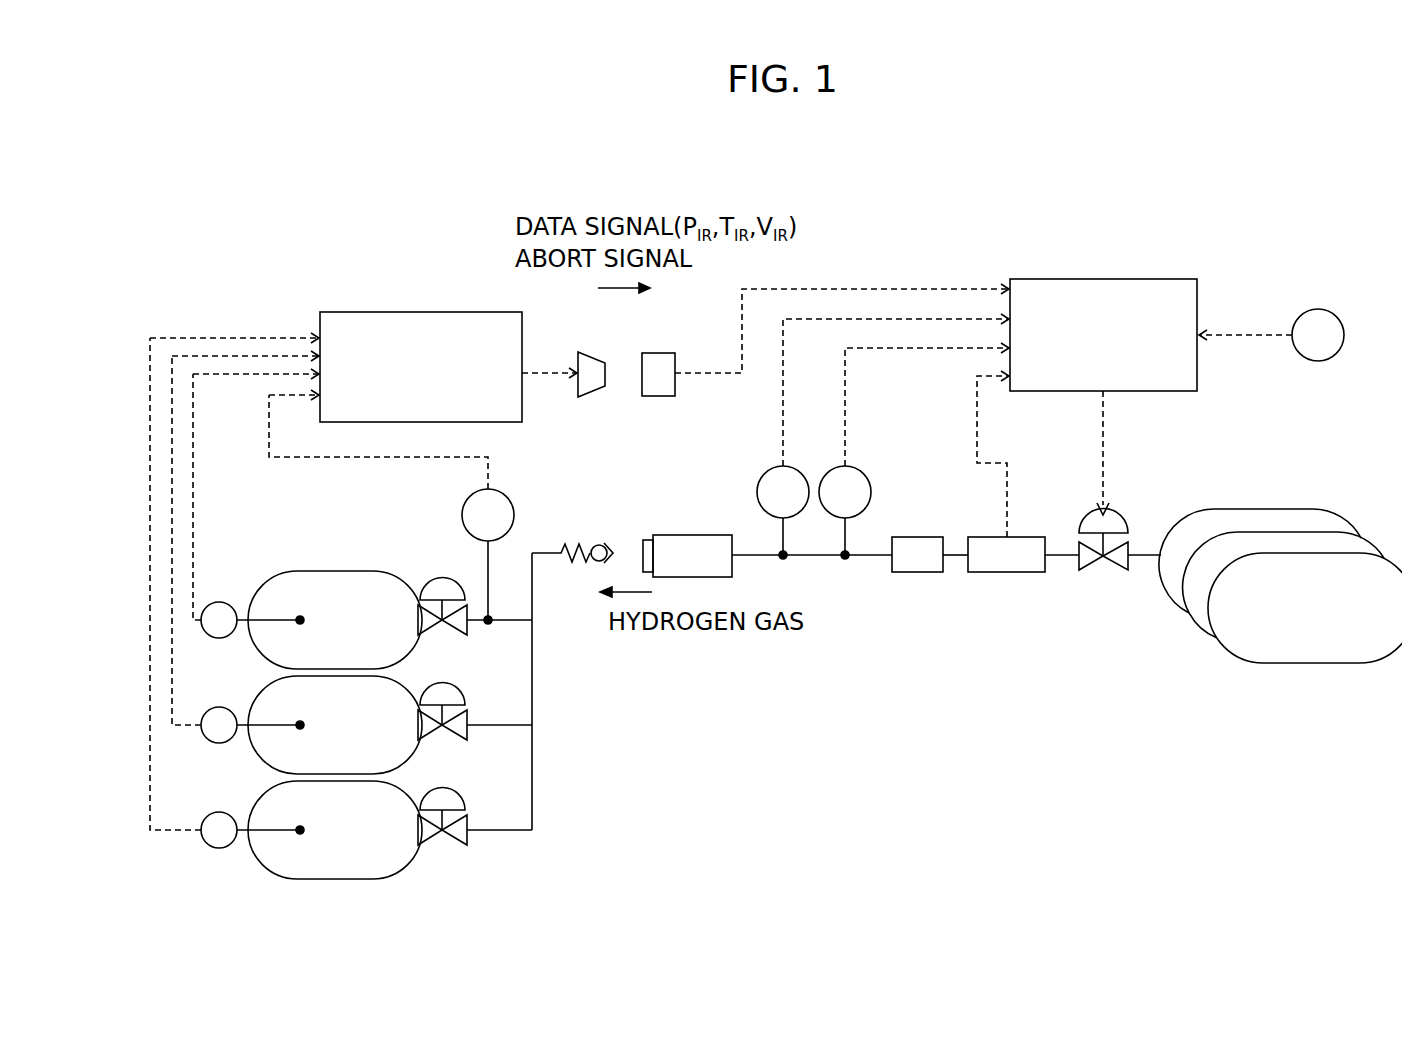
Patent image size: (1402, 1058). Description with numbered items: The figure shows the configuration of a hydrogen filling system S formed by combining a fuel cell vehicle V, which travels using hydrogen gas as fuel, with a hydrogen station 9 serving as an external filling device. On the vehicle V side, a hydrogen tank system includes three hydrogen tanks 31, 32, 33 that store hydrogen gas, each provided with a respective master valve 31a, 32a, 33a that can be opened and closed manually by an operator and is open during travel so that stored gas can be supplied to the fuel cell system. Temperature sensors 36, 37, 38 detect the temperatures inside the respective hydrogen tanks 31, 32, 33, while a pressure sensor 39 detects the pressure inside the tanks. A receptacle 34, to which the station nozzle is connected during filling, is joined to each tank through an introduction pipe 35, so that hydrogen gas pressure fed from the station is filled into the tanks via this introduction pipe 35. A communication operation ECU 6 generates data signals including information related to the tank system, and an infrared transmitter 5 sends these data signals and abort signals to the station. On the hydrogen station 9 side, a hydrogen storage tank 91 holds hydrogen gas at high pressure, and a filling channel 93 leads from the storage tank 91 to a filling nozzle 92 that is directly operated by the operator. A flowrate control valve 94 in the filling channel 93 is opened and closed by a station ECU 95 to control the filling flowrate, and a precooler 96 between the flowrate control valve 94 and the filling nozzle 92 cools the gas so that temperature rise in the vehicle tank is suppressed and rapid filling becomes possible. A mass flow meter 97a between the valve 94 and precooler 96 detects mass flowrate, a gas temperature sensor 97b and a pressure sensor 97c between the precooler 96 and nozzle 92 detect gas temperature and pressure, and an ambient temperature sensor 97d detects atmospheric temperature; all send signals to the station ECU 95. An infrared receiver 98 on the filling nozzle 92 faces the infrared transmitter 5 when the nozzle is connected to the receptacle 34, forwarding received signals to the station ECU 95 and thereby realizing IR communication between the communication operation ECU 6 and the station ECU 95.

The hydrogen filling system S is at (352, 156).
The fuel cell vehicle V is at (462, 239).
The hydrogen station 9 is at (874, 236).
The communication operation ECU 6 is at (440, 312).
The infrared transmitter 5 is at (590, 352).
The infrared receiver 98 is at (658, 353).
The station ECU 95 is at (1110, 279).
The ambient temperature sensor 97d is at (1332, 310).
The pressure sensor 97c is at (790, 467).
The gas temperature sensor 97b is at (854, 467).
The filling channel 93 is at (820, 558).
The filling nozzle 92 is at (700, 535).
The precooler 96 is at (917, 537).
The mass flow meter 97a is at (1022, 537).
The flowrate control valve 94 is at (1120, 520).
The hydrogen storage tank 91 is at (1262, 509).
The receptacle 34 is at (603, 543).
The introduction pipe 35 is at (532, 618).
The pressure sensor 39 is at (497, 489).
The hydrogen tank 31 is at (392, 573).
The master valve 31a is at (442, 587).
The temperature sensor 36 is at (222, 602).
The hydrogen tank 32 is at (414, 680).
The master valve 32a is at (462, 692).
The temperature sensor 37 is at (222, 707).
The hydrogen tank 33 is at (414, 785).
The master valve 33a is at (462, 797).
The temperature sensor 38 is at (222, 812).